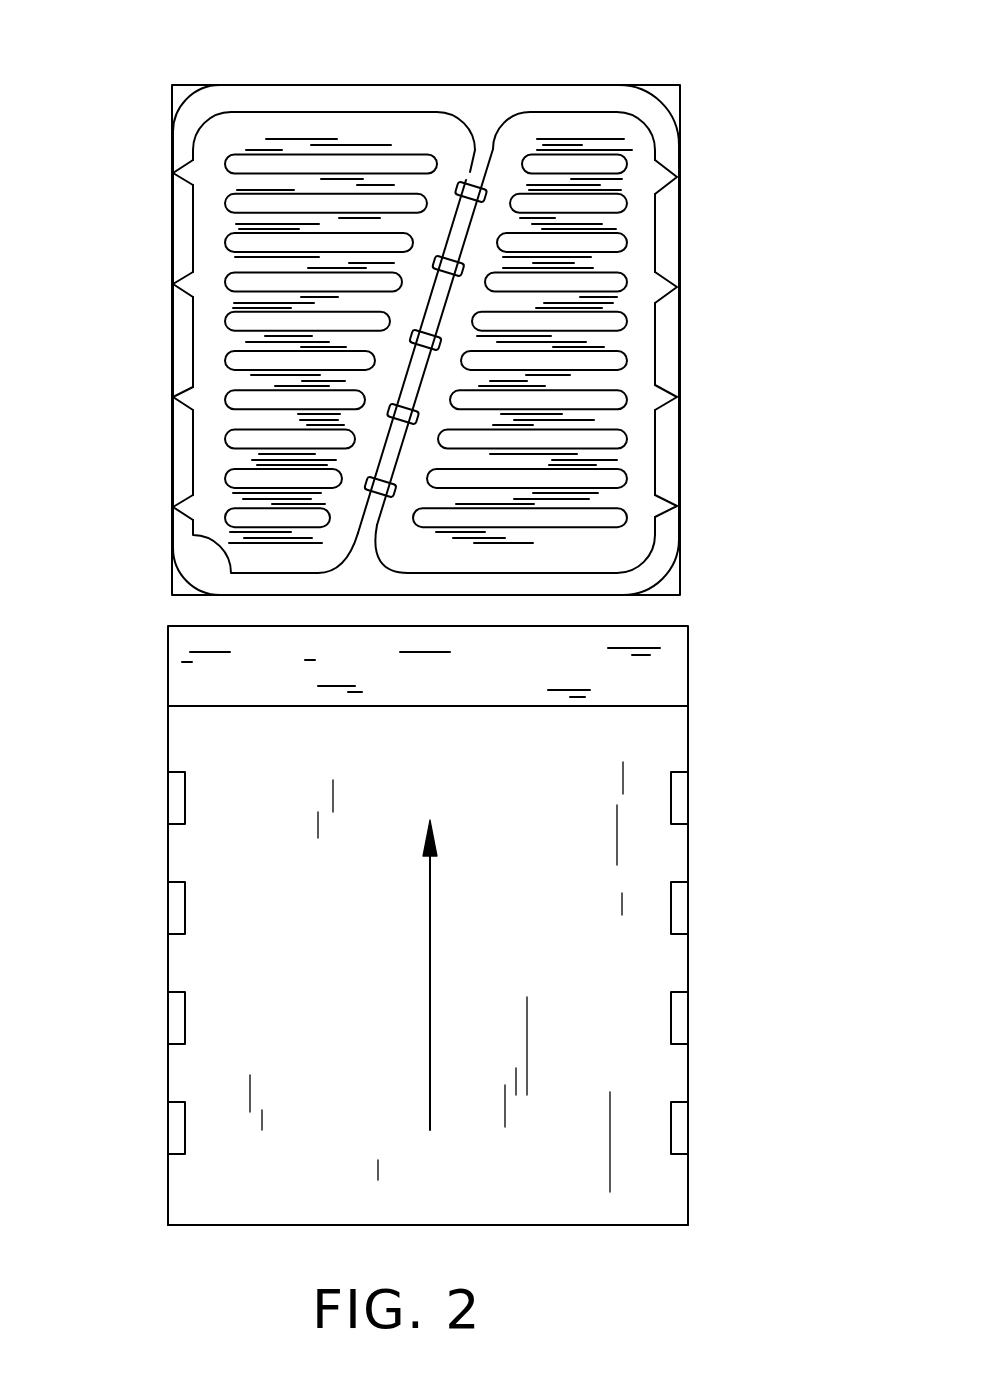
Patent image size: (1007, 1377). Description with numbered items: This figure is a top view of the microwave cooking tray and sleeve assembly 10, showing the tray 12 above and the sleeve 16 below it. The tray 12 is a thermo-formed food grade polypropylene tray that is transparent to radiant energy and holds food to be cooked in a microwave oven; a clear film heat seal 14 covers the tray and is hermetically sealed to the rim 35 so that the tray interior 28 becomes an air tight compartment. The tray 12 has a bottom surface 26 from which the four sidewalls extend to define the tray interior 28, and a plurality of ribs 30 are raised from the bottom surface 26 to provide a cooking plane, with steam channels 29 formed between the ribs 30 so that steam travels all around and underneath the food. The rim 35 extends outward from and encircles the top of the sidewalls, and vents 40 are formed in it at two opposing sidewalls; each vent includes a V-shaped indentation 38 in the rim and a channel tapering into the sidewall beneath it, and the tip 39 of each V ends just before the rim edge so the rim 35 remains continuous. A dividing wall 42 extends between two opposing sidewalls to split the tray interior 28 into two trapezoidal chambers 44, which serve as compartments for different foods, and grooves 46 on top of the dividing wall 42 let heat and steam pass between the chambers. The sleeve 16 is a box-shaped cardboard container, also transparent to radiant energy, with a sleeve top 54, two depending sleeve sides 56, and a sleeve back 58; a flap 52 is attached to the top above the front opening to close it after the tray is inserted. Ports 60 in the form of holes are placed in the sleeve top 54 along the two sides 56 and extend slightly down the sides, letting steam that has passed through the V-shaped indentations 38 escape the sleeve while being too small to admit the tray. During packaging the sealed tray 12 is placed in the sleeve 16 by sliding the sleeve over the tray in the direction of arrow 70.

The microwave cooking tray and sleeve assembly 10 is at (790, 658).
The tray 12 is at (667, 543).
The heat seal 14 is at (667, 102).
The sleeve 16 is at (670, 975).
The bottom surface 26 is at (648, 360).
The tray interior 28 is at (200, 332).
The steam channels 29 is at (243, 182).
The ribs 30 is at (230, 243).
The rim 35 is at (185, 357).
The V-shaped indentations 38 is at (183, 498).
The tip 39 is at (173, 283).
The vents 40 is at (173, 172).
The dividing wall 42 is at (468, 170).
The trapezoidal chambers 44 is at (218, 383).
The grooves 46 is at (440, 262).
The flap 52 is at (655, 680).
The sleeve top 54 is at (625, 1095).
The sleeve sides 56 is at (168, 840).
The sleeve back 58 is at (545, 1227).
The ports 60 is at (170, 795).
The arrow 70 is at (432, 975).